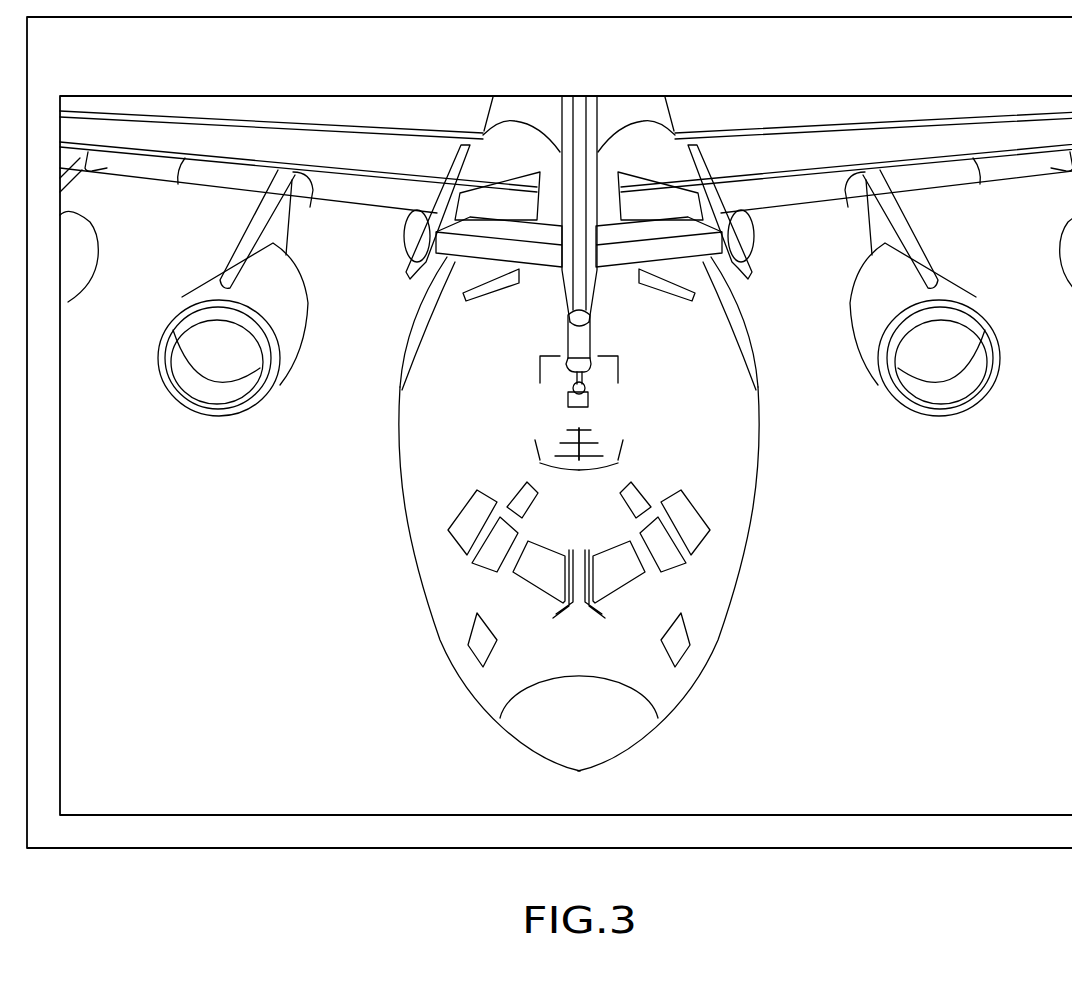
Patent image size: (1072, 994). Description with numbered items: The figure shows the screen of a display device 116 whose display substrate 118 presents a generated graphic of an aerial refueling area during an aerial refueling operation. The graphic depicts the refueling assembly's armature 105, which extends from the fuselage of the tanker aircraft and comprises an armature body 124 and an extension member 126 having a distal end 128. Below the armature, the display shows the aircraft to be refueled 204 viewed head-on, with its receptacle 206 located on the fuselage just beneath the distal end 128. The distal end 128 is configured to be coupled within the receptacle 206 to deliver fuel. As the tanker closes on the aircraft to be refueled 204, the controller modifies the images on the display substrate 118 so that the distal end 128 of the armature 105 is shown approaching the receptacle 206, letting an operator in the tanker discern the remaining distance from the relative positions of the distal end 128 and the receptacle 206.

The display device 116 is at (71, 45).
The display substrate 118 is at (191, 96).
The armature body 124 is at (598, 120).
The armature 105 is at (606, 337).
The extension member 126 is at (578, 381).
The distal end 128 is at (584, 386).
The receptacle 206 is at (563, 403).
The aircraft to be refueled 204 is at (708, 704).